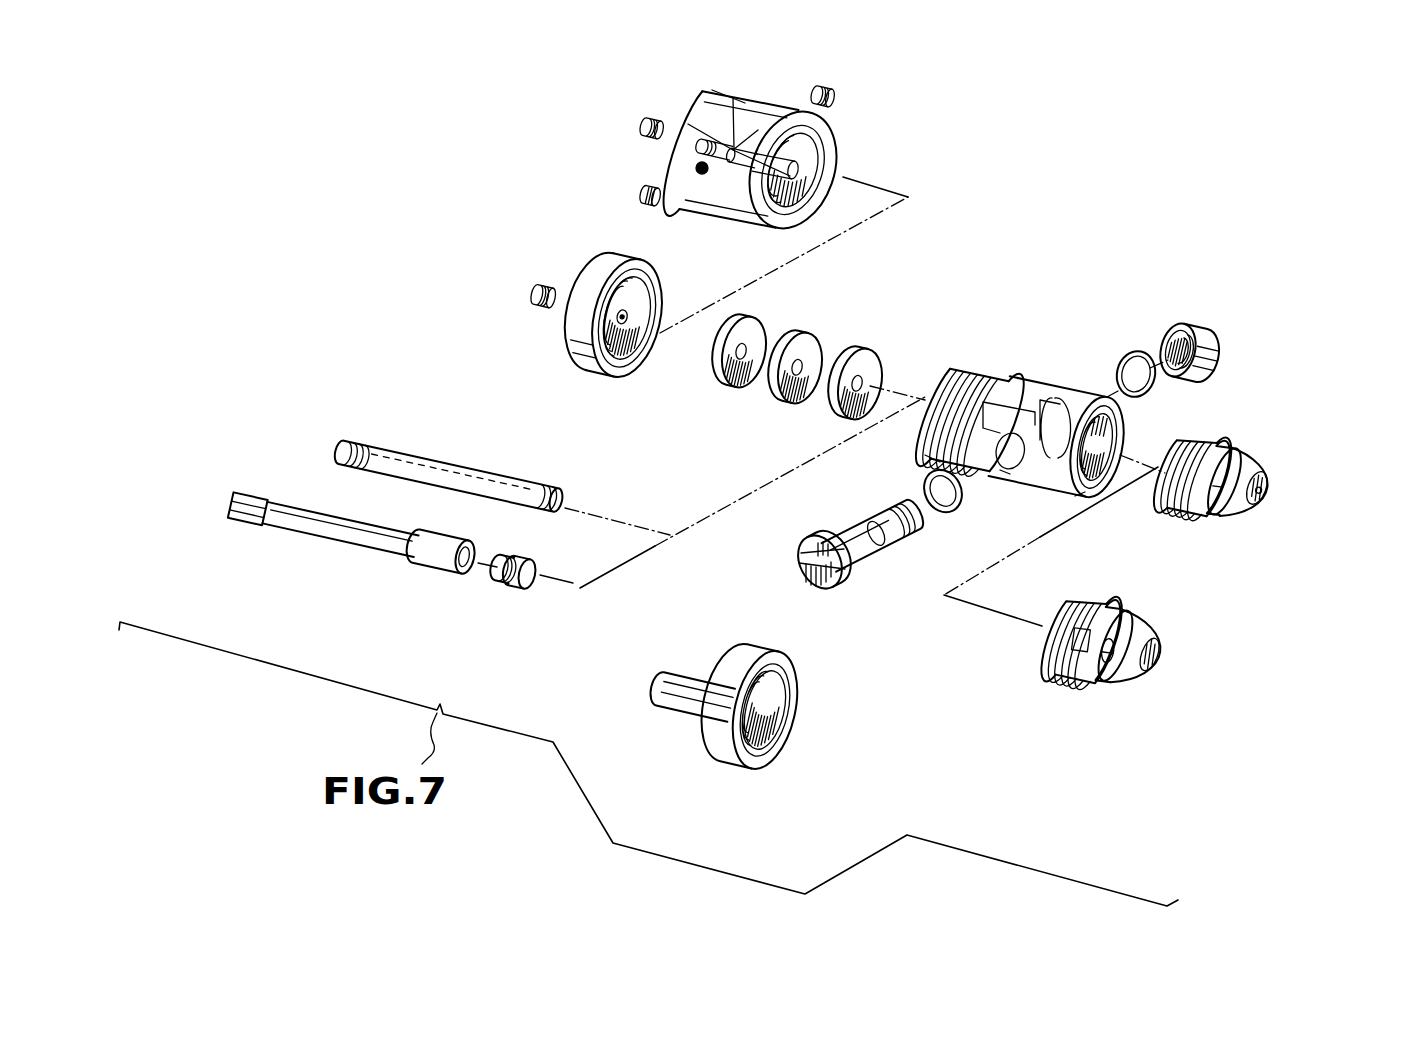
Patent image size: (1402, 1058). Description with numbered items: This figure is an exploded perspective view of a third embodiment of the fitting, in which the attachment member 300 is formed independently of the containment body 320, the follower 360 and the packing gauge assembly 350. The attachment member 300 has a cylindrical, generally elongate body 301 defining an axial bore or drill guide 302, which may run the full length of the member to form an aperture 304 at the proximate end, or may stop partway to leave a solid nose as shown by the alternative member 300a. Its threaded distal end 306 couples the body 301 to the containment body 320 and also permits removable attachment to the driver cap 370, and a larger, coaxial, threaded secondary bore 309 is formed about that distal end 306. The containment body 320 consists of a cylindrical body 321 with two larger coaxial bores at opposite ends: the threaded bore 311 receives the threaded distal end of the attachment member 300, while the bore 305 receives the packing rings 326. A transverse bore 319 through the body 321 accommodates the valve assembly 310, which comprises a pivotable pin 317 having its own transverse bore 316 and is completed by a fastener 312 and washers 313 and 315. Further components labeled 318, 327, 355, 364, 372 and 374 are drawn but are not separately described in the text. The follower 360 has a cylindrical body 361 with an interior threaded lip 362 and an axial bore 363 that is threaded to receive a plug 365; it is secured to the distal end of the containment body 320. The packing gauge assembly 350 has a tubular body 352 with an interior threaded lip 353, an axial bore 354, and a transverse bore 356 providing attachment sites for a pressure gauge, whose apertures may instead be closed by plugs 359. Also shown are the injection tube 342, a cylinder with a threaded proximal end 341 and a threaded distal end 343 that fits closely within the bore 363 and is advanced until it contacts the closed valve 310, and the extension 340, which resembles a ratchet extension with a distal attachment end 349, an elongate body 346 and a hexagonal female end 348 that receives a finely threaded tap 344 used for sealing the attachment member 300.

The attachment member 300 is at (1245, 531).
The solid nose attachment member 300a is at (1117, 684).
The elongate body 301 is at (1203, 518).
The bore or drill guide 302 is at (1250, 453).
The aperture 304 is at (1267, 493).
The bore 305 is at (925, 452).
The threaded distal end 306 is at (1200, 435).
The secondary bore 309 is at (1221, 447).
The valve assembly 310 is at (904, 553).
The threaded bore 311 is at (1075, 496).
The fastener 312 is at (1190, 322).
The washer 313 is at (1130, 352).
The washer 315 is at (925, 481).
The transverse bore 316 is at (873, 553).
The pin 317 is at (840, 532).
The screw head 318 is at (798, 562).
The transverse bore 319 is at (1043, 420).
The containment body 320 is at (1017, 491).
The cylindrical body 321 is at (1000, 464).
The packing rings 326 is at (797, 335).
The orifice disc 327 is at (877, 373).
The extension 340 is at (426, 585).
The threaded proximal end 341 is at (557, 495).
The injection tube 342 is at (471, 463).
The threaded distal end 343 is at (343, 435).
The tap 344 is at (512, 588).
The elongate body 346 is at (350, 552).
The hexagonal female end 348 is at (447, 572).
The distal attachment end 349 is at (252, 517).
The packing gauge assembly 350 is at (750, 63).
The tubular body 352 is at (787, 105).
The interior threaded lip 353 is at (800, 163).
The axially disposed bore 354 is at (700, 140).
The set screw 355 is at (640, 128).
The transverse bore 356 is at (698, 165).
The plugs 359 is at (840, 103).
The follower 360 is at (552, 342).
The cylindrical body 361 is at (585, 373).
The interior threaded lip 362 is at (650, 284).
The axially disposed bore 363 is at (648, 350).
The hole 364 is at (626, 392).
The plug 365 is at (534, 297).
The driver cap 370 is at (732, 776).
The knob ring 372 is at (720, 758).
The stem 374 is at (665, 703).